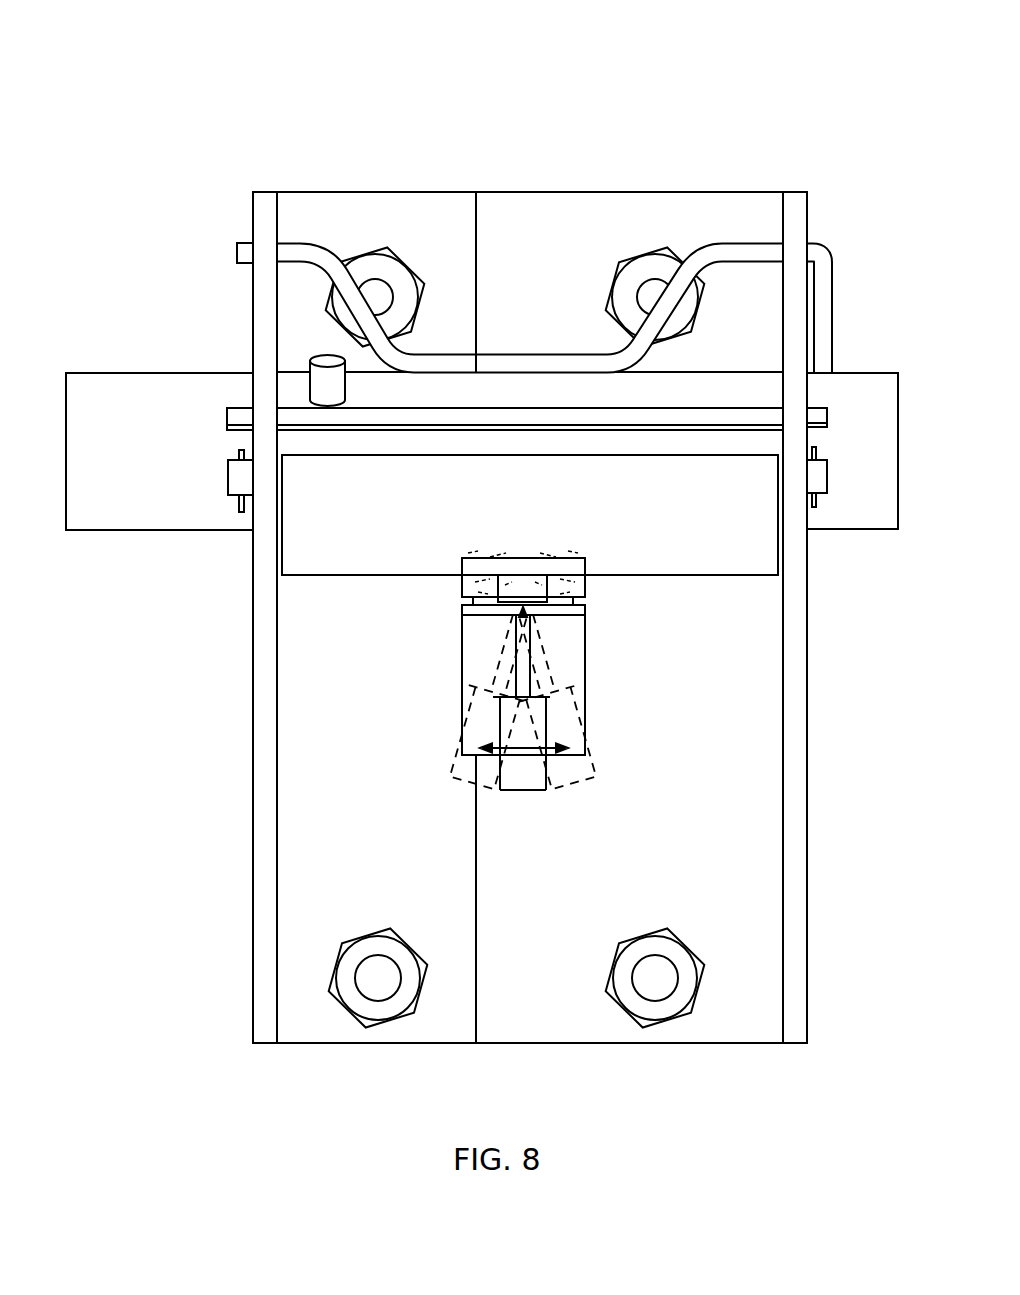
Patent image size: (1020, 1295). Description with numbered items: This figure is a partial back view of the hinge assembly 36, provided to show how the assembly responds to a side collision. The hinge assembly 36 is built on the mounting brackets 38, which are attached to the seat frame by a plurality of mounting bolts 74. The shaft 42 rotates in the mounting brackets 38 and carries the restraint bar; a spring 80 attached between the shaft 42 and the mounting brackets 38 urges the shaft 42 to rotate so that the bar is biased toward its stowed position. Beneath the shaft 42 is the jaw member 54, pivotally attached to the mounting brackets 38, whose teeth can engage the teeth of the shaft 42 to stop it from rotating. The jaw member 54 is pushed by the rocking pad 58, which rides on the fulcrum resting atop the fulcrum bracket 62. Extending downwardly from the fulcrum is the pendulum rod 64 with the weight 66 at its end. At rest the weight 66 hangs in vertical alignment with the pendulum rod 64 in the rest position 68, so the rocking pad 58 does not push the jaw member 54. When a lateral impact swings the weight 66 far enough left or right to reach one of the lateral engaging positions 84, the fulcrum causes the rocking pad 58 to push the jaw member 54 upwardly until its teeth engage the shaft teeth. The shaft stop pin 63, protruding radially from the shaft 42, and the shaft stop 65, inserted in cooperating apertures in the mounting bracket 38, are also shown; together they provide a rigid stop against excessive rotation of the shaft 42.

The hinge assembly 36 is at (470, 165).
The mounting brackets 38 is at (298, 1017).
The shaft 42 is at (75, 372).
The jaw member 54 is at (348, 547).
The rocking pad 58 is at (585, 567).
The fulcrum bracket 62 is at (572, 658).
The shaft stop pin 63 is at (322, 392).
The pendulum rod 64 is at (520, 672).
The shaft stop 65 is at (227, 413).
The weight 66 is at (533, 775).
The rest position 68 is at (525, 792).
The mounting bolts 74 is at (660, 258).
The spring 80 is at (842, 357).
The lateral engaging positions 84 is at (475, 785).